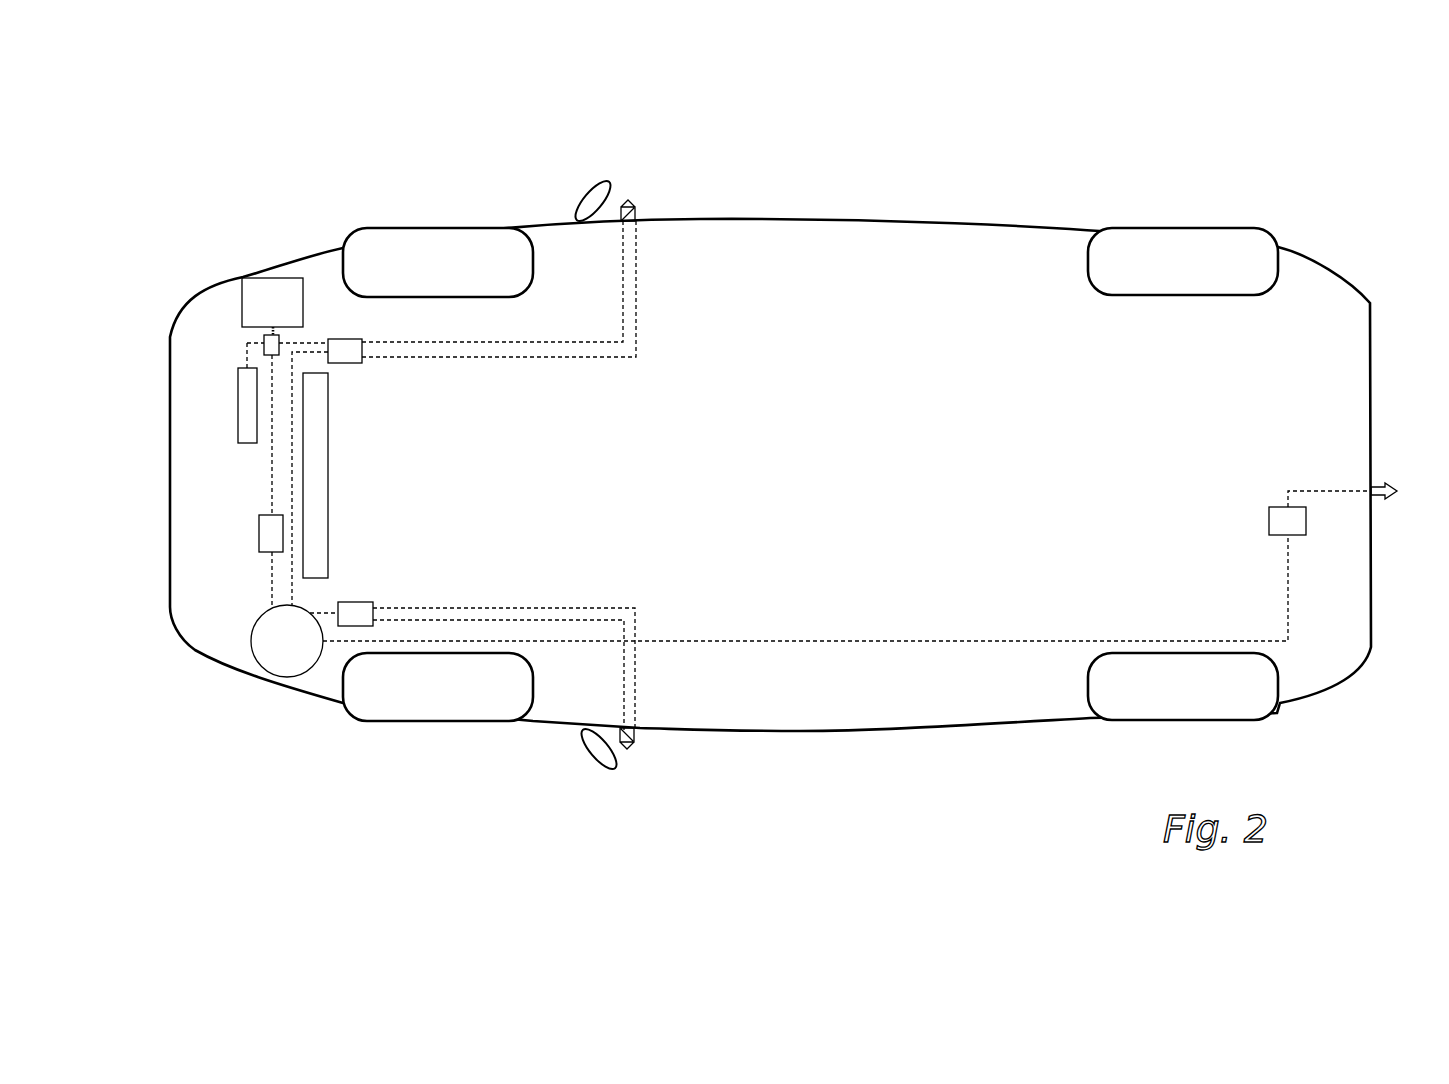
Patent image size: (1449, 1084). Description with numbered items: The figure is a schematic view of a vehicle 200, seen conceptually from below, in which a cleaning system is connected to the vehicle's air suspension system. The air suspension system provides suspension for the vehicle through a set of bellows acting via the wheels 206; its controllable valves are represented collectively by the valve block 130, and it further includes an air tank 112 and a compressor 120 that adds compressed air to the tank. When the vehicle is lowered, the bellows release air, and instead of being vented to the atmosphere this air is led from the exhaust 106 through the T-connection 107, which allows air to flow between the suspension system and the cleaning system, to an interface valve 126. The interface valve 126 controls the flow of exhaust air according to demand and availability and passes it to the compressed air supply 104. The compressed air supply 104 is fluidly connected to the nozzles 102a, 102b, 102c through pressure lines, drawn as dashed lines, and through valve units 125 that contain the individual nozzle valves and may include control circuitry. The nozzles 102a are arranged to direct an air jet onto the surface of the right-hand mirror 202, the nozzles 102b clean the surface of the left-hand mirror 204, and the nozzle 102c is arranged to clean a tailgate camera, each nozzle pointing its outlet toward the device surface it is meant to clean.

The vehicle 200 is at (832, 172).
The wheels 206 is at (428, 237).
The left-hand mirror 204 is at (582, 188).
The right-hand mirror 202 is at (580, 748).
The nozzles 102a is at (619, 728).
The nozzles 102b is at (605, 243).
The nozzle 102c is at (1392, 487).
The compressor 120 is at (265, 277).
The T-connection 107 is at (280, 345).
The exhaust 106 is at (263, 344).
The valve block 130 is at (237, 390).
The air tank 112 is at (328, 470).
The interface valve 126 is at (259, 540).
The compressed air supply 104 is at (260, 657).
The valve units 125 is at (347, 363).